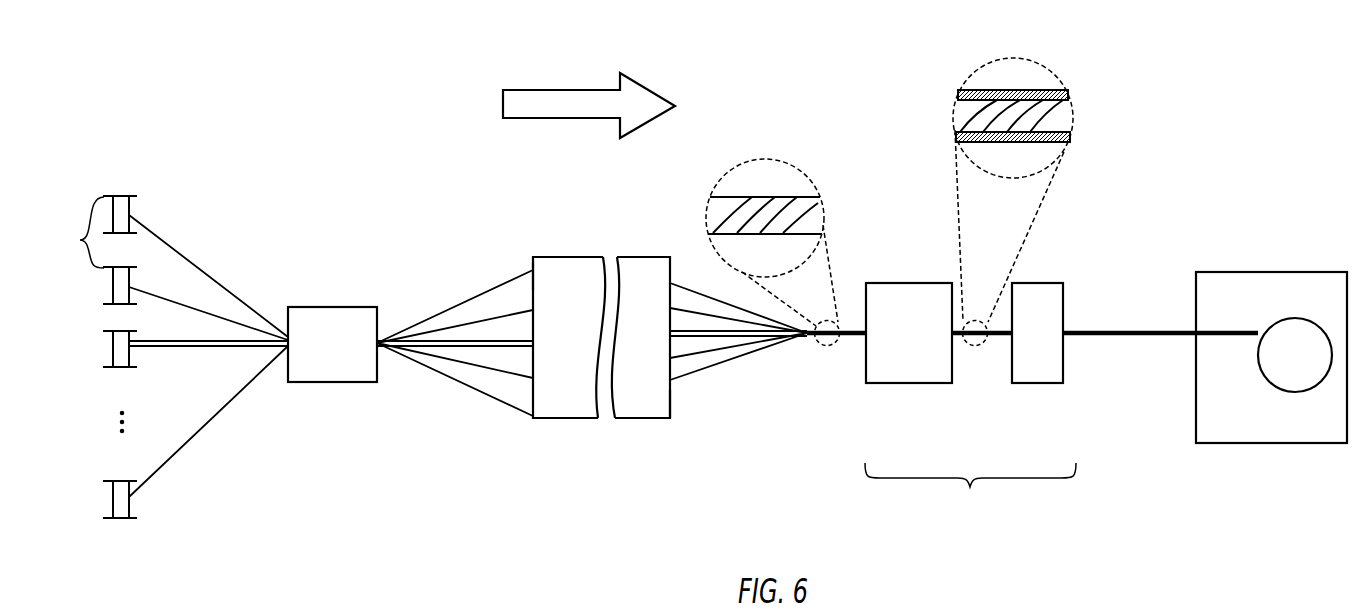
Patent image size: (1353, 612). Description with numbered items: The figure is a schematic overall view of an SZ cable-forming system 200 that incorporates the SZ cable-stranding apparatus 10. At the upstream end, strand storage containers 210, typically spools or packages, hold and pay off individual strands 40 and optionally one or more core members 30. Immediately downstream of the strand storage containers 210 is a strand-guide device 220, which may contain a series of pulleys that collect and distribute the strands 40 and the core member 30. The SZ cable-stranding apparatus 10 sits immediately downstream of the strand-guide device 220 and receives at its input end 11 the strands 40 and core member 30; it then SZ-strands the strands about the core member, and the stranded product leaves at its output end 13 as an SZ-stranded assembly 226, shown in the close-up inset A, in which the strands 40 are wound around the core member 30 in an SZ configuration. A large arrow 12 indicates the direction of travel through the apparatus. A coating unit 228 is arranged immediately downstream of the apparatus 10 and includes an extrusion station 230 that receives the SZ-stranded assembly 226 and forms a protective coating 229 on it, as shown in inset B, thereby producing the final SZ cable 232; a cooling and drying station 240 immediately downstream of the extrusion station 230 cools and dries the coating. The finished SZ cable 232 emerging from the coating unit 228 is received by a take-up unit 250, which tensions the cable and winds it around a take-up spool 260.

The SZ cable-forming system 200 is at (243, 124).
The strand storage containers 210 is at (80, 240).
The strands 40 is at (213, 310).
The core member 30 is at (227, 349).
The strand-guide device 220 is at (349, 357).
The SZ cable-stranding apparatus 10 is at (548, 233).
The input end 11 is at (533, 270).
The output end 13 is at (672, 405).
The process direction 12 is at (576, 90).
The SZ-stranded assembly 226 is at (777, 207).
The protective coating 229 is at (1058, 92).
The SZ cable 232 is at (985, 140).
The extrusion station 230 is at (925, 346).
The cooling and drying station 240 is at (1040, 384).
The coating unit 228 is at (970, 494).
The take-up unit 250 is at (1227, 272).
The take-up spool 260 is at (1287, 393).